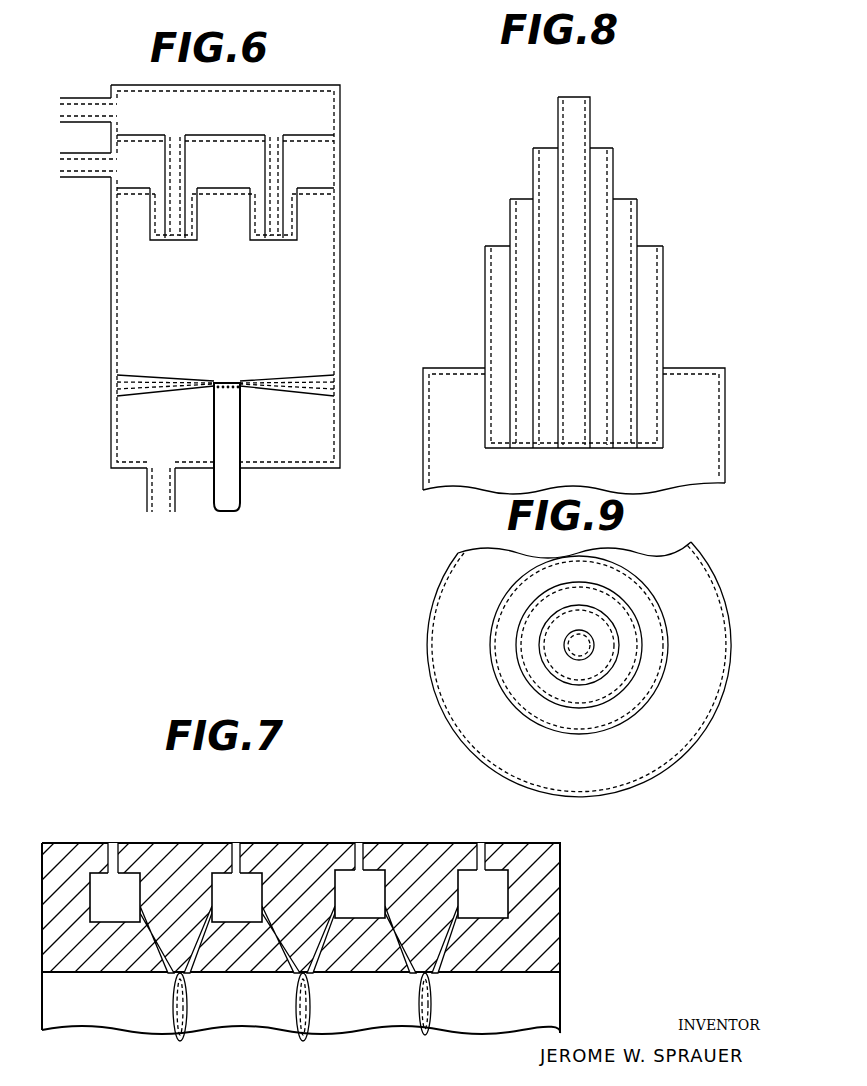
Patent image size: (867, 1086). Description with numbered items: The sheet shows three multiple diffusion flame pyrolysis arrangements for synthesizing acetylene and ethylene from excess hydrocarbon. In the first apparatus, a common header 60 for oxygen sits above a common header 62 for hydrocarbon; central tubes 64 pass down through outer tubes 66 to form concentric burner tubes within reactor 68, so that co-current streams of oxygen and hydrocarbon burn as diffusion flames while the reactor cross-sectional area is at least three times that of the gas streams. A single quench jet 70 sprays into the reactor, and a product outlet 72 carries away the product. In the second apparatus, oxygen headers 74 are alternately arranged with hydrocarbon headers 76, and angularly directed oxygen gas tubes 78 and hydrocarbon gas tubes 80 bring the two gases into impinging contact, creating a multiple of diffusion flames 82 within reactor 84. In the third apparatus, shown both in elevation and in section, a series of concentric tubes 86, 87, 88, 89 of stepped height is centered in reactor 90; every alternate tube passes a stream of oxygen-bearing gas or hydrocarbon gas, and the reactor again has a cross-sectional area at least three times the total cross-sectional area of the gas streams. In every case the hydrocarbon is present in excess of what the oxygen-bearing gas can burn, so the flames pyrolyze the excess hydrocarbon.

In FIG. 6, the common header for oxygen 60 is at (228, 121).
In FIG. 6, the common header for hydrocarbon 62 is at (321, 151).
In FIG. 6, the central tubes 64 is at (262, 163).
In FIG. 6, the outer tubes 66 is at (251, 214).
In FIG. 6, the reactor 68 is at (340, 243).
In FIG. 6, the quench jet 70 is at (214, 421).
In FIG. 6, the product outlet 72 is at (147, 490).
In FIG. 7, the oxygen headers 74 is at (126, 908).
In FIG. 7, the hydrocarbon headers 76 is at (248, 908).
In FIG. 7, the oxygen gas tubes 78 is at (166, 969).
In FIG. 7, the hydrocarbon gas tubes 80 is at (198, 966).
In FIG. 7, the diffusion flames 82 is at (292, 1012).
In FIG. 7, the reactor 84 is at (566, 985).
In FIG. 8, the concentric tube 86 is at (558, 104).
In FIG. 9, the concentric tube 86 is at (592, 632).
In FIG. 8, the concentric tube 87 is at (533, 166).
In FIG. 9, the concentric tube 87 is at (594, 607).
In FIG. 8, the concentric tube 88 is at (510, 220).
In FIG. 9, the concentric tube 88 is at (594, 580).
In FIG. 8, the concentric tube 89 is at (485, 273).
In FIG. 9, the concentric tube 89 is at (656, 604).
In FIG. 8, the reactor 90 is at (725, 432).
In FIG. 9, the reactor 90 is at (708, 562).